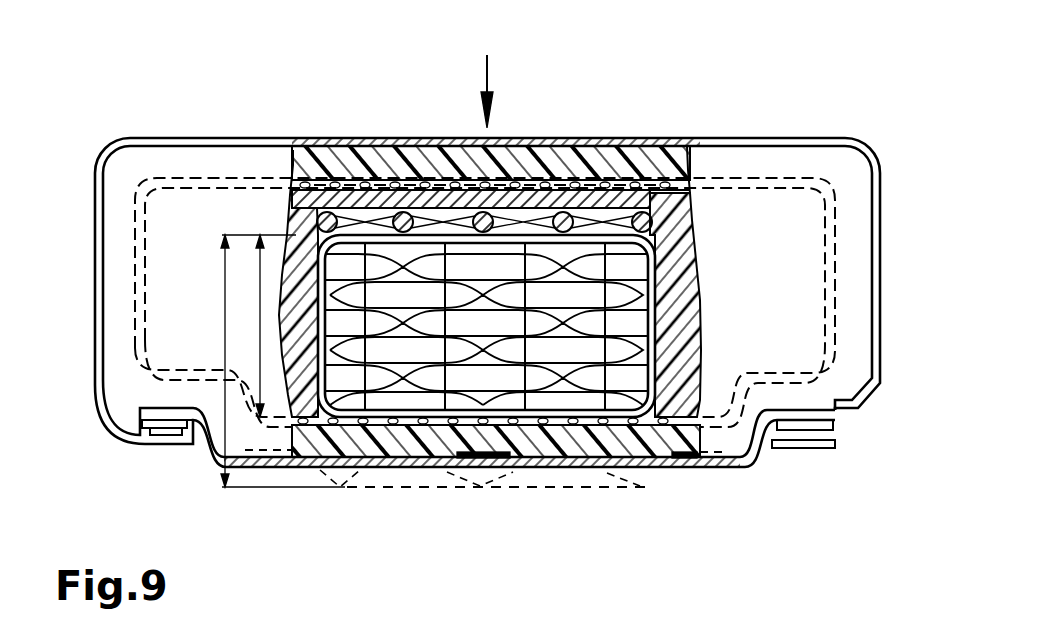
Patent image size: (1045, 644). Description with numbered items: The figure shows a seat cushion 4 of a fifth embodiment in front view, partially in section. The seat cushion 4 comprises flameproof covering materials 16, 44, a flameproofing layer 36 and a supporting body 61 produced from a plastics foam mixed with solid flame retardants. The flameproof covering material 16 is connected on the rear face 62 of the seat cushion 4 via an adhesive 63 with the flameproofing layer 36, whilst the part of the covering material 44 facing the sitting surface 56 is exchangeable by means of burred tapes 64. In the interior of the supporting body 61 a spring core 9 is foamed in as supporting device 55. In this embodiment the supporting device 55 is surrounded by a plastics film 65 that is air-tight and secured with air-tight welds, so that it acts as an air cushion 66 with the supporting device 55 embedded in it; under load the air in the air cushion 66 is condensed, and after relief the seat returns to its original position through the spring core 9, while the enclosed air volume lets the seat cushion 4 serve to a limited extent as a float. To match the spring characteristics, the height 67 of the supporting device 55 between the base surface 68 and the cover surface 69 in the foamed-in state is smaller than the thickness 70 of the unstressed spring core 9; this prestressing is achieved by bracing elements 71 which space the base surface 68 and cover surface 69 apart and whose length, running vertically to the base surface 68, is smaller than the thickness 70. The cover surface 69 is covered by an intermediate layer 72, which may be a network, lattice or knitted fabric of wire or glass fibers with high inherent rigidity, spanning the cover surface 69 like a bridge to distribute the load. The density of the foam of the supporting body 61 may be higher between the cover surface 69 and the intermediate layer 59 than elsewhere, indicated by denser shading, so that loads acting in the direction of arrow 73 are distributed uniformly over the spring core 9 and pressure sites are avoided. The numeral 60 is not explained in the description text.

The seat cushion 4 is at (847, 110).
The spring core 9 is at (630, 276).
The flameproof covering material 16 is at (550, 467).
The flameproofing layer 36 is at (680, 158).
The flameproof covering material 44 is at (400, 150).
The supporting device 55 is at (290, 235).
The sitting surface 56 is at (495, 146).
The intermediate layer 59 is at (448, 164).
The ball row 60 is at (637, 195).
The supporting body 61 is at (700, 232).
The rear face 62 is at (657, 470).
The adhesive 63 is at (271, 488).
The burred tapes 64 is at (168, 430).
The plastics film 65 is at (650, 307).
The air cushion 66 is at (630, 328).
The height 67 is at (257, 300).
The base surface 68 is at (545, 430).
The cover surface 69 is at (602, 216).
The thickness 70 is at (225, 337).
The bracing elements 71 is at (596, 468).
The intermediate layer 72 is at (542, 200).
The arrow 73 is at (492, 68).